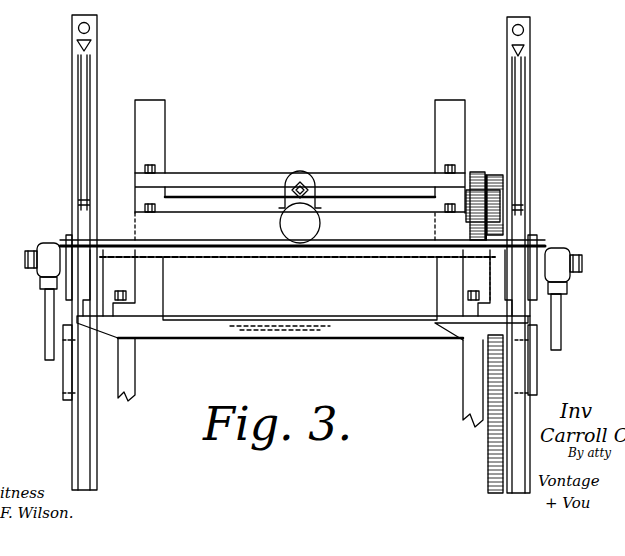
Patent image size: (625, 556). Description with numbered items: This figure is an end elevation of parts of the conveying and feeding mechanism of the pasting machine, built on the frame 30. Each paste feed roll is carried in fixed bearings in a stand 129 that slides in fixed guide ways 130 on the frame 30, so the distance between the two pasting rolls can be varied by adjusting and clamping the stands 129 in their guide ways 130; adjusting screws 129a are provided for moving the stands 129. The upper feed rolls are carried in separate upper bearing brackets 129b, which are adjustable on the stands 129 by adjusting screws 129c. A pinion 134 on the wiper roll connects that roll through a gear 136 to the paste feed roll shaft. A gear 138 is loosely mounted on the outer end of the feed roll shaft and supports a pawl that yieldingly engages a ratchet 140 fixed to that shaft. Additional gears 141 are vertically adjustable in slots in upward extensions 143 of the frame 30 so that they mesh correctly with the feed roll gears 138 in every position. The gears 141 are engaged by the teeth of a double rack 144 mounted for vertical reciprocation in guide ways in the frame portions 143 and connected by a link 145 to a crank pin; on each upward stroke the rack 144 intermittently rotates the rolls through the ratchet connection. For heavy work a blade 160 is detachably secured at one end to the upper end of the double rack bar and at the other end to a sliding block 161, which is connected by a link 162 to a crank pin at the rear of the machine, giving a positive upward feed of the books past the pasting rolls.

The upward frame extension 143 is at (72, 76).
The upper bearing bracket 129b is at (150, 100).
The adjusting screw 129c is at (305, 178).
The adjusting screw 129a is at (320, 228).
The stand 129 is at (155, 273).
The guide way 130 is at (133, 303).
The pinion 134 is at (470, 206).
The gear 136 is at (476, 171).
The feed roll gear 138 is at (497, 176).
The ratchet 140 is at (489, 176).
The adjustable gear 141 is at (489, 268).
The double rack 144 is at (488, 453).
The link 145 is at (556, 331).
The blade 160 is at (290, 297).
The sliding block 161 is at (68, 385).
The link 162 is at (45, 338).
The frame 30 is at (135, 370).